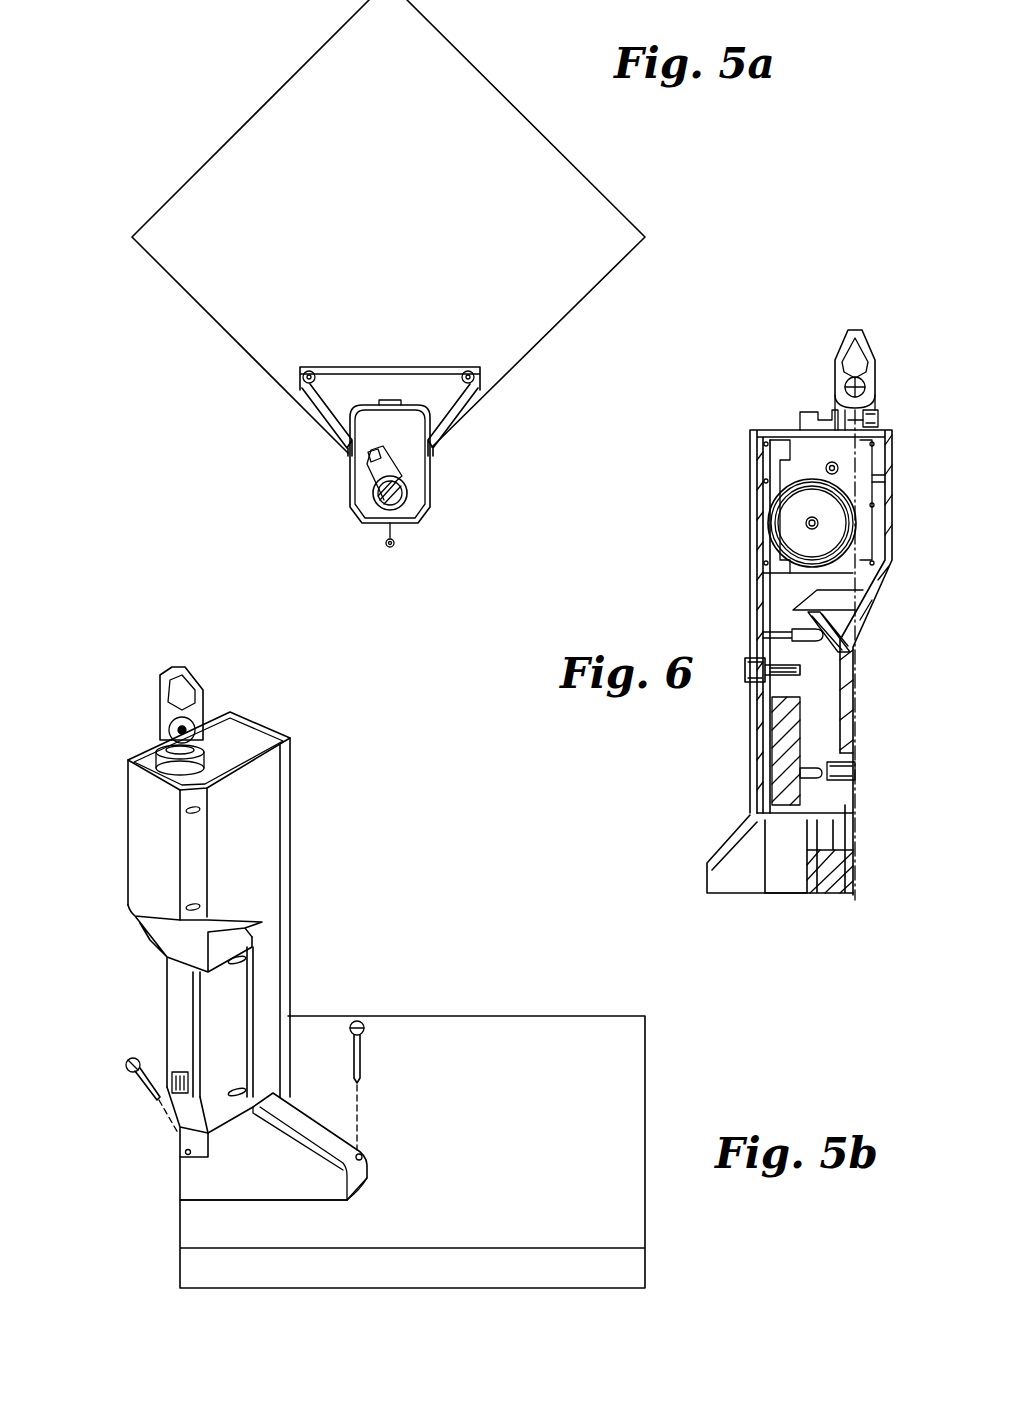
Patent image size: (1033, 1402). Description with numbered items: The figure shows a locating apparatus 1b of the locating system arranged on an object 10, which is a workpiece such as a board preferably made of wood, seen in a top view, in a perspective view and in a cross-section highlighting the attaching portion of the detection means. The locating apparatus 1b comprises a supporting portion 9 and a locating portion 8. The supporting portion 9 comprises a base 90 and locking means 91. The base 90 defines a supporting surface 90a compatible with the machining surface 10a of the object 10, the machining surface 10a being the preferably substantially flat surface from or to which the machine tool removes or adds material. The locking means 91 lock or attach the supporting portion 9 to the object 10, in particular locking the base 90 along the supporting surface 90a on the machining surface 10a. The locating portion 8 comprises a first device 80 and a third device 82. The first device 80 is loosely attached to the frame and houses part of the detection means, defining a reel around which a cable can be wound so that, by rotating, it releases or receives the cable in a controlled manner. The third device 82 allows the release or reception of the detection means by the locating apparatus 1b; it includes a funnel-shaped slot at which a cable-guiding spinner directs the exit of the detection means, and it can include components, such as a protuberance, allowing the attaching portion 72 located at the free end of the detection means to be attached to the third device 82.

In FIG. 5A, the locating apparatus 1b is at (407, 431).
In FIG. 6, the locating apparatus 1b is at (767, 626).
In FIG. 5B, the locating apparatus 1b is at (259, 952).
In FIG. 5A, the locating portion 8 is at (354, 506).
In FIG. 6, the locating portion 8 is at (795, 586).
In FIG. 5B, the locating portion 8 is at (175, 912).
In FIG. 5A, the supporting portion 9 is at (374, 353).
In FIG. 6, the supporting portion 9 is at (739, 877).
In FIG. 5B, the supporting portion 9 is at (263, 1084).
In FIG. 5A, the object 10 is at (388, 226).
In FIG. 5B, the object 10 is at (412, 1152).
In FIG. 5A, the machining surface 10a is at (450, 227).
In FIG. 5B, the machining surface 10a is at (577, 1133).
In FIG. 5A, the attaching portion 72 is at (376, 509).
In FIG. 6, the attaching portion 72 is at (837, 346).
In FIG. 5B, the attaching portion 72 is at (180, 721).
In FIG. 6, the first device 80 is at (793, 530).
In FIG. 5A, the third device 82 is at (397, 466).
In FIG. 6, the third device 82 is at (874, 410).
In FIG. 5A, the base 90 is at (366, 380).
In FIG. 6, the base 90 is at (707, 880).
In FIG. 5B, the base 90 is at (277, 1177).
In FIG. 6, the supporting surface 90a is at (775, 895).
In FIG. 5B, the supporting surface 90a is at (320, 1202).
In FIG. 5A, the locking means 91 is at (473, 370).
In FIG. 5B, the locking means 91 is at (160, 1145).